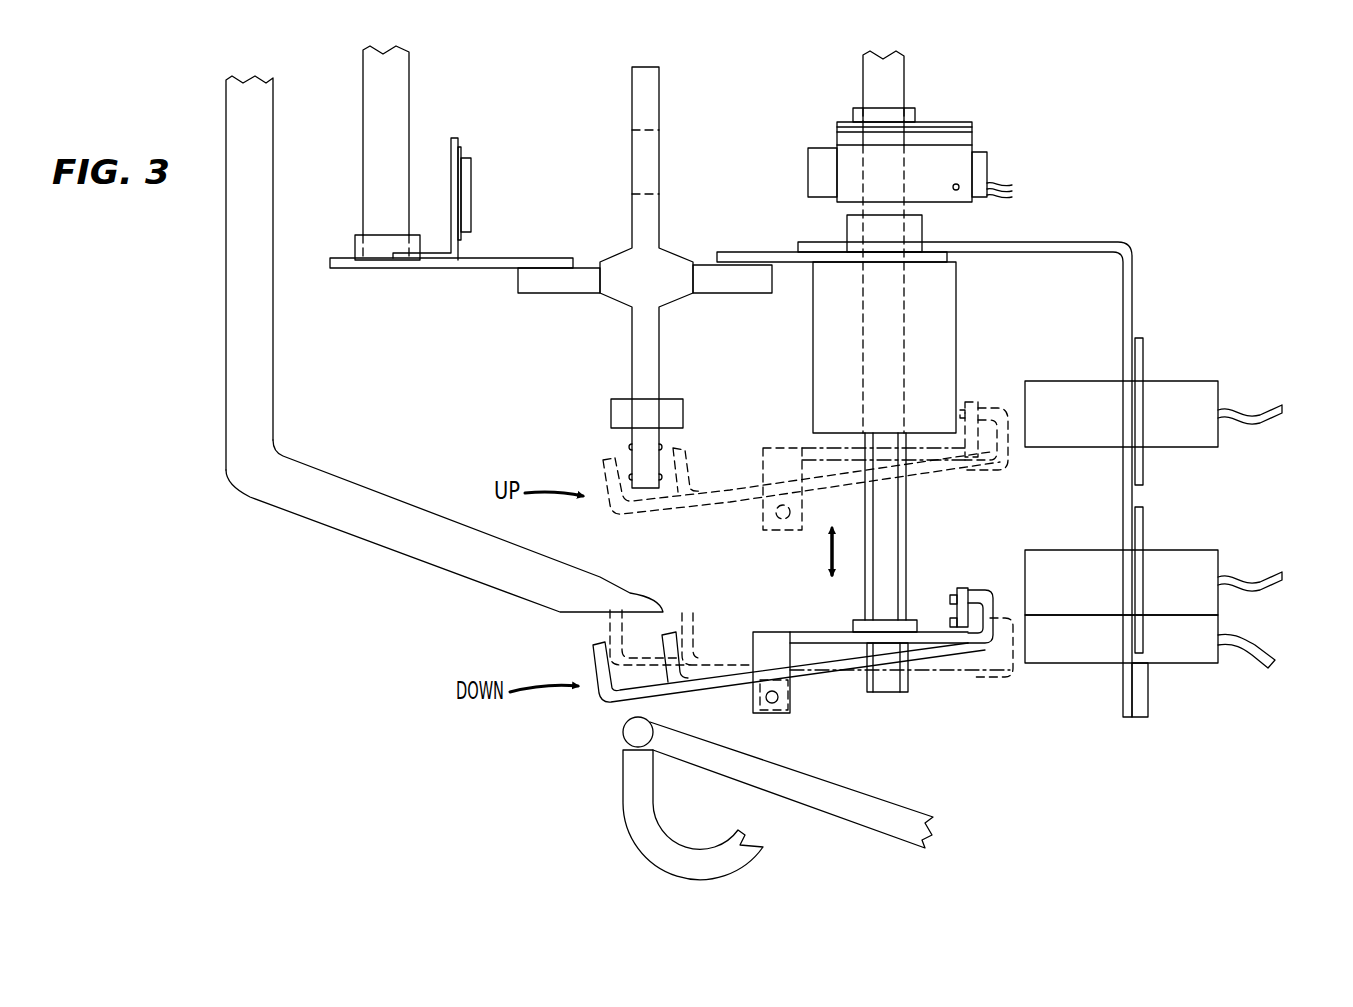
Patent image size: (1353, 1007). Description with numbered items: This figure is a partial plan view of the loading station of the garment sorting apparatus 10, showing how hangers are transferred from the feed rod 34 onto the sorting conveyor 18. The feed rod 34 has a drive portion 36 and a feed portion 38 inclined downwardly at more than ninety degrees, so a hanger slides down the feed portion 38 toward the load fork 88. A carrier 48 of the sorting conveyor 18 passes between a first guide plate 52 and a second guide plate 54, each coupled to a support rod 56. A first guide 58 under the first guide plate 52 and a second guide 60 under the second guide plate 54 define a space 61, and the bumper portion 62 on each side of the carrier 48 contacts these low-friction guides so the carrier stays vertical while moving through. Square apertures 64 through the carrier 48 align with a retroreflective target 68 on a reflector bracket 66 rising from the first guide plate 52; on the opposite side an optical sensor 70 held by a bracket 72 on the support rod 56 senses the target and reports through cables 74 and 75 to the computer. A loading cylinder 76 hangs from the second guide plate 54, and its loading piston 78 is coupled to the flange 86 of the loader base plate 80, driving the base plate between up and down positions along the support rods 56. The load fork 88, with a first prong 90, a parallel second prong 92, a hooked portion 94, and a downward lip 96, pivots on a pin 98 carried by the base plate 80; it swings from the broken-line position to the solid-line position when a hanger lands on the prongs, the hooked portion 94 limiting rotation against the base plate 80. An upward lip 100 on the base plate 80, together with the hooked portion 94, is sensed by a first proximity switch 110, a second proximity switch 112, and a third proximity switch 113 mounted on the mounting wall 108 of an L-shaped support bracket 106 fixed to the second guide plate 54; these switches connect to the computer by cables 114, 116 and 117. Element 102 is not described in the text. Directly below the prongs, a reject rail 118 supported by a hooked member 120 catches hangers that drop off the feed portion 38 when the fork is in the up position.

The apparatus 10 is at (797, 74).
The sorting conveyor 18 is at (680, 96).
The feed rod 34 is at (205, 292).
The drive portion 36 is at (273, 180).
The feed portion 38 is at (315, 518).
The carrier 48 is at (632, 112).
The first guide plate 52 is at (345, 270).
The second guide plate 54 is at (740, 252).
The support rod 56 is at (363, 76).
The first guide 58 is at (518, 293).
The second guide 60 is at (735, 293).
The space 61 is at (603, 242).
The bumper portion 62 is at (693, 262).
The square aperture 64 is at (632, 172).
The reflector bracket 66 is at (455, 140).
The retroreflective target 68 is at (471, 182).
The optical sensor 70 is at (808, 162).
The bracket 72 is at (972, 135).
The cable 74 is at (1013, 196).
The cable 75 is at (1000, 178).
The loading cylinder 76 is at (956, 297).
The loading piston 78 is at (907, 506).
The loader base plate 80 is at (773, 625).
The flange 86 is at (888, 612).
The load fork 88 is at (713, 640).
The first prong 90 is at (593, 650).
The second prong 92 is at (688, 612).
The hooked portion 94 is at (1005, 588).
The lip 96 is at (753, 700).
The pin 98 is at (780, 700).
The lip 100 is at (975, 585).
The stop block 102 is at (950, 598).
The L-shaped support bracket 106 is at (1100, 242).
The mounting wall 108 is at (1123, 322).
The first proximity switch 110 is at (1185, 381).
The second proximity switch 112 is at (1185, 550).
The third proximity switch 113 is at (1080, 663).
The cable 114 is at (1260, 405).
The cable 116 is at (1255, 578).
The cable 117 is at (1248, 648).
The reject rail 118 is at (622, 732).
The hooked member 120 is at (622, 823).